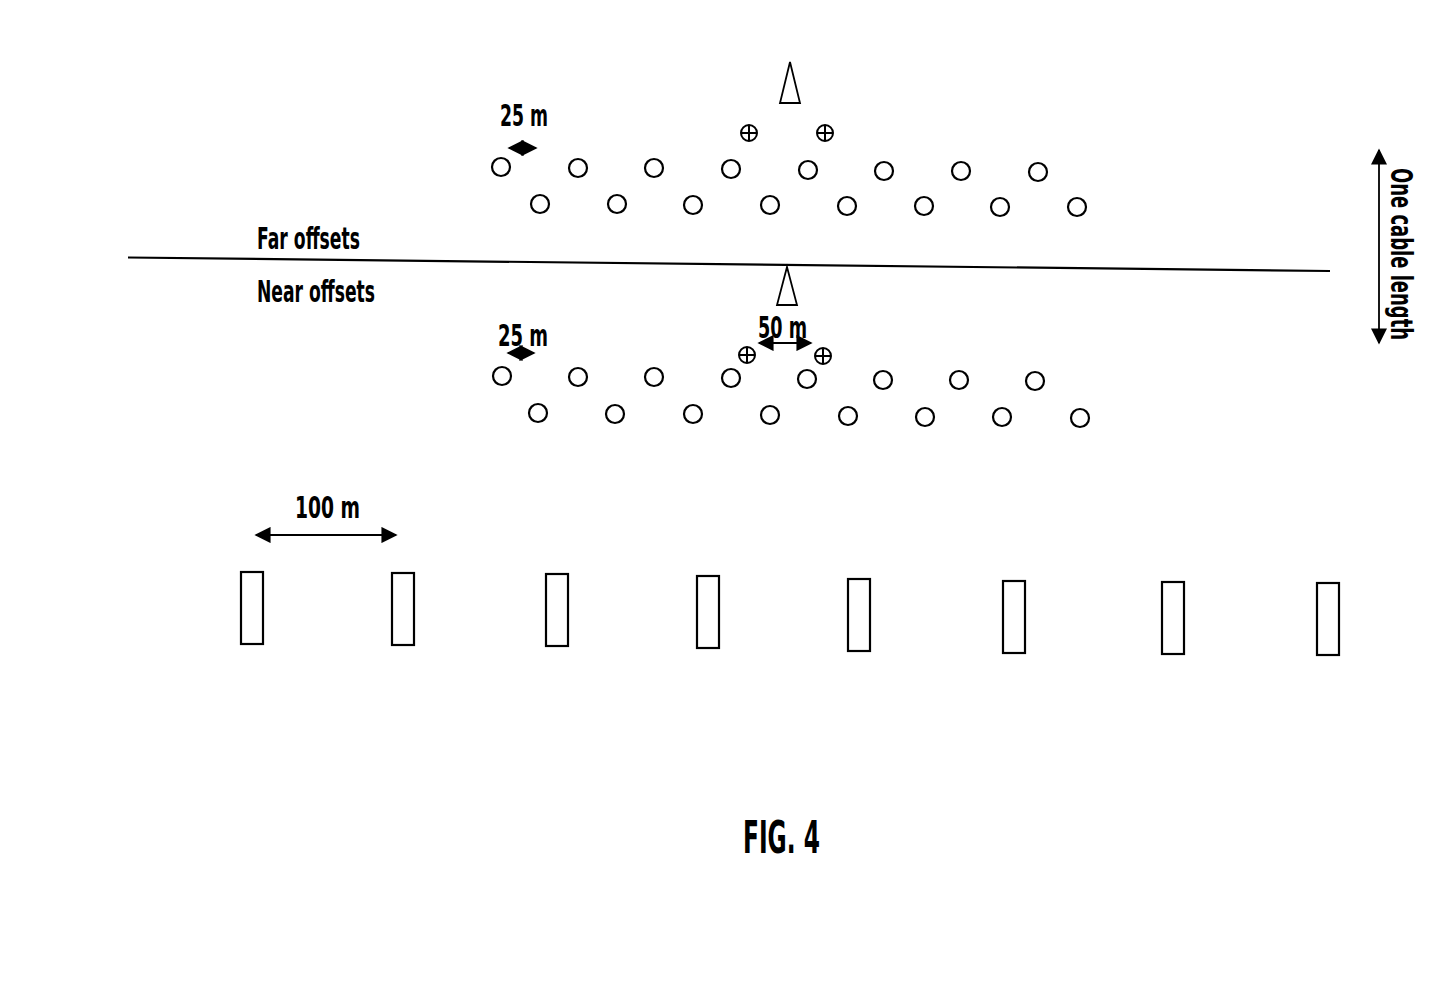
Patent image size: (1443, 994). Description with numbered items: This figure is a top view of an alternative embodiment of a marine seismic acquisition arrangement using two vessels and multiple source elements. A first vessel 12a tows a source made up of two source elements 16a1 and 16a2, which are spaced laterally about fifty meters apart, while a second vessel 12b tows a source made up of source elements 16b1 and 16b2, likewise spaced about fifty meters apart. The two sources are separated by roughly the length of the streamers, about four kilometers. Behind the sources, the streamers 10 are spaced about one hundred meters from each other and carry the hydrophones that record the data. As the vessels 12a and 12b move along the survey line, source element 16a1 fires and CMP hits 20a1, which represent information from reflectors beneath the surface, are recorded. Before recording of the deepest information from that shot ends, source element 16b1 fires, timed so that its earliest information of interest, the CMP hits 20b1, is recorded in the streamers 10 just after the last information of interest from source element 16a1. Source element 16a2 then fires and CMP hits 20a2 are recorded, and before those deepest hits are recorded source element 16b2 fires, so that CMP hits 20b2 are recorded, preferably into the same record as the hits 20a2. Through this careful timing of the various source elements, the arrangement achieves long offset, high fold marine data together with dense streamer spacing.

The streamers 10 is at (241, 615).
The vessel 12a is at (795, 293).
The vessel 12b is at (798, 84).
The source element 16a1 is at (741, 351).
The source element 16a2 is at (831, 351).
The source element 16b1 is at (743, 127).
The source element 16b2 is at (833, 128).
The CMP hits 20a1 is at (1080, 427).
The CMP hits 20a2 is at (1044, 386).
The CMP hits 20b1 is at (1077, 216).
The CMP hits 20b2 is at (1047, 167).